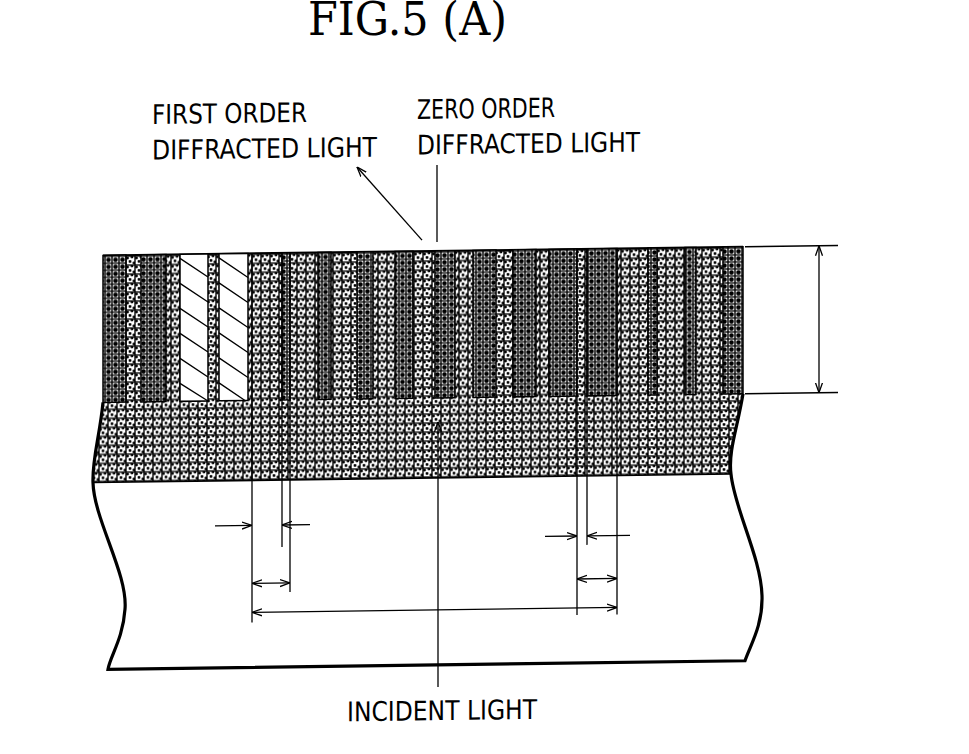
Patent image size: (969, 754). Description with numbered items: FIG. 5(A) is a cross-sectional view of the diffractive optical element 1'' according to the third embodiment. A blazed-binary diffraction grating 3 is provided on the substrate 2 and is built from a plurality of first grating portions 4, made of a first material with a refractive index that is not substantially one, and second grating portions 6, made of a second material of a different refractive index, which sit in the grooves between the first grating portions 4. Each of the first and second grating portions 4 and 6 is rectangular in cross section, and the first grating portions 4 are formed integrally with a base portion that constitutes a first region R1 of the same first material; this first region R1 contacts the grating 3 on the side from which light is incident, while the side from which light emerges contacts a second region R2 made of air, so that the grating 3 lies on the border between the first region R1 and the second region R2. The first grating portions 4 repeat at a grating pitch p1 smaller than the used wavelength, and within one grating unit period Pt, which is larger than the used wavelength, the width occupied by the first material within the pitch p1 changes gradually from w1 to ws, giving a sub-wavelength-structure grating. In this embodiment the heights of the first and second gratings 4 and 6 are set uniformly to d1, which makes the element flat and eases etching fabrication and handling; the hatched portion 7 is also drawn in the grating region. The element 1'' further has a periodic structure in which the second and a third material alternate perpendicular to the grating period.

The diffractive optical element 1'' is at (449, 387).
The substrate 2 is at (752, 562).
The blazed-binary diffraction grating 3 is at (394, 288).
The first grating portions 4 is at (268, 268).
The second grating portions 6 is at (154, 296).
The hatched portion 7 is at (195, 270).
The first region R1 is at (735, 436).
The second region R2 is at (488, 243).
The grating height d1 is at (794, 319).
The grating width w1 is at (258, 438).
The grating width ws is at (585, 431).
The grating pitch p1 is at (434, 433).
The grating unit period Pt is at (434, 591).